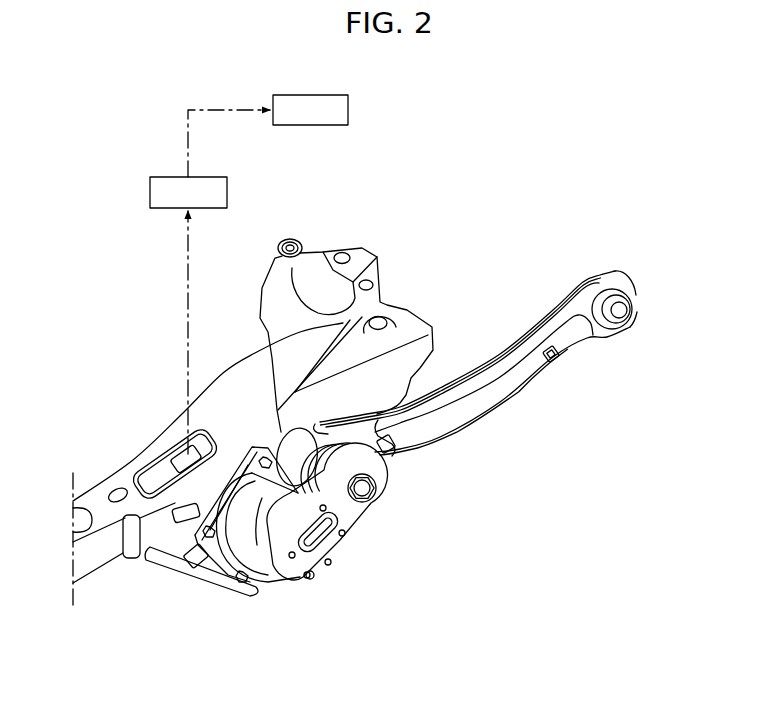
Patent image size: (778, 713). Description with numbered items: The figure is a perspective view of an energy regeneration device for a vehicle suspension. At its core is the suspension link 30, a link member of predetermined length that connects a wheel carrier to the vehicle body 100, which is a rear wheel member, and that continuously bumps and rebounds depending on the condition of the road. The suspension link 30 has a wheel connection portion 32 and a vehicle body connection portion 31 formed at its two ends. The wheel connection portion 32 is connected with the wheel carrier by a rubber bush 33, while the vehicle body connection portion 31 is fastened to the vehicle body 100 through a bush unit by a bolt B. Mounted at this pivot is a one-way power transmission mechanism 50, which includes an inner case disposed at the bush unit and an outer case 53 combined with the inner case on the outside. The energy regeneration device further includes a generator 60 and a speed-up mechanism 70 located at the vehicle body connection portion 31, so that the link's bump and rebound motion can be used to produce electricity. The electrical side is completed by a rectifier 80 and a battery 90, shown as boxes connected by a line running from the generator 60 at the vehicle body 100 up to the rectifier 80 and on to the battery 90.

The suspension link 30 is at (473, 406).
The vehicle body connection portion 31 is at (291, 447).
The wheel connection portion 32 is at (593, 276).
The rubber bush 33 is at (627, 317).
The one-way power transmission mechanism 50 is at (294, 560).
The outer case 53 is at (350, 513).
The generator 60 is at (175, 457).
The speed-up mechanism 70 is at (248, 586).
The rectifier 80 is at (150, 192).
The battery 90 is at (349, 110).
The vehicle body 100 is at (123, 480).
The bolt B is at (371, 493).